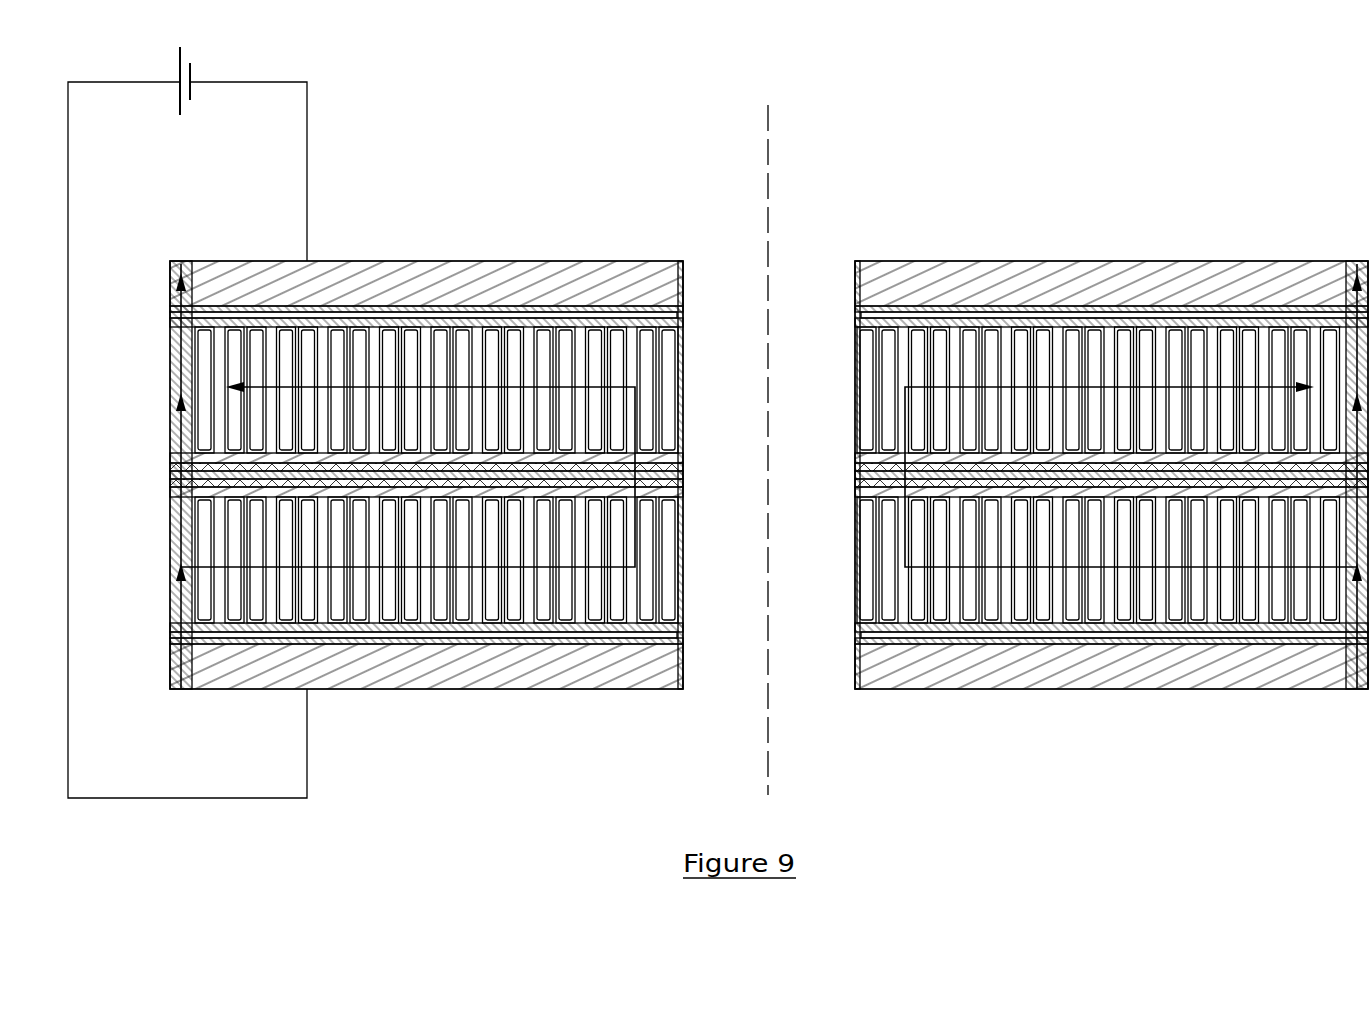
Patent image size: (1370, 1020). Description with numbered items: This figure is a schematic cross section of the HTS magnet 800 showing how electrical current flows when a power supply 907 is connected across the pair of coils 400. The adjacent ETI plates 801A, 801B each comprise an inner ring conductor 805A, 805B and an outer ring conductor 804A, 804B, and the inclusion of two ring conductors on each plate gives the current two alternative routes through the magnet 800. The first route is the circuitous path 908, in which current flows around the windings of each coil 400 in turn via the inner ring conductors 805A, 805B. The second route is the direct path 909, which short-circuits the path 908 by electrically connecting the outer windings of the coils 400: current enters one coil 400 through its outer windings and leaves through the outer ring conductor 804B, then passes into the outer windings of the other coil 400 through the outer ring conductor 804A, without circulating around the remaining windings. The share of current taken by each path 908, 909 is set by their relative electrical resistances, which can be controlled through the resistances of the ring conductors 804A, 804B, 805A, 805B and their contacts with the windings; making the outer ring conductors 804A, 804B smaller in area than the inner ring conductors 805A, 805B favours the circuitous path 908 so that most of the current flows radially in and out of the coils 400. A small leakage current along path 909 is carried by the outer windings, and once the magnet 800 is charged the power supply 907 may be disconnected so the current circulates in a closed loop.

The power supply 907 is at (187, 416).
The ETI plate 801A is at (533, 430).
The ETI plate 801B is at (545, 482).
The outer ring conductor 804A is at (180, 457).
The outer ring conductor 804B is at (180, 493).
The inner ring conductor 805A is at (662, 466).
The inner ring conductor 805B is at (662, 486).
The direct path 909 is at (180, 473).
The circuitous path 908 is at (425, 572).
The HTS magnet 800 is at (1252, 240).
The coil 400 is at (1232, 405).